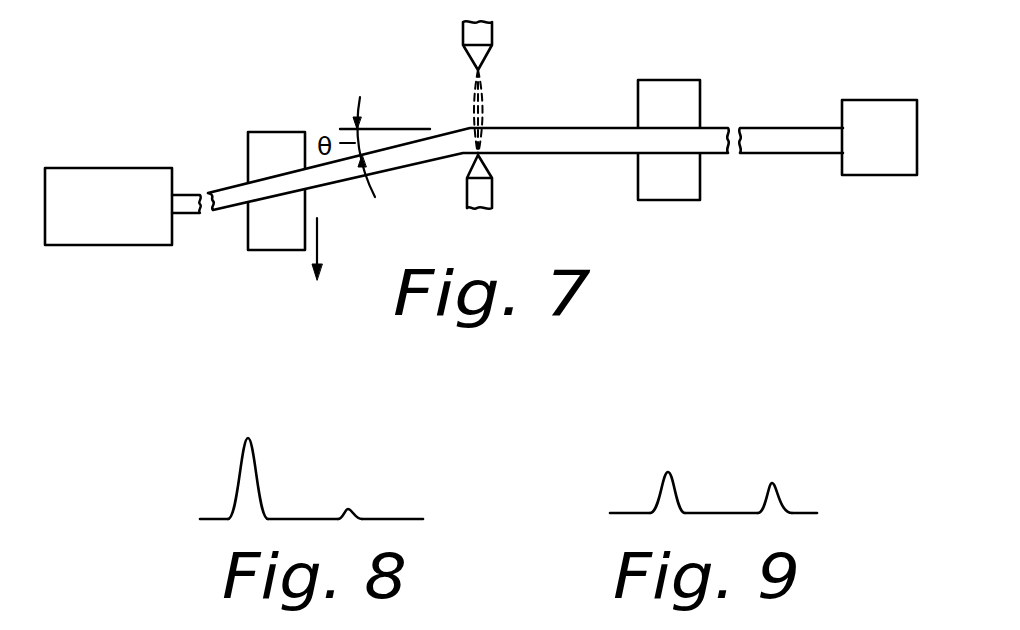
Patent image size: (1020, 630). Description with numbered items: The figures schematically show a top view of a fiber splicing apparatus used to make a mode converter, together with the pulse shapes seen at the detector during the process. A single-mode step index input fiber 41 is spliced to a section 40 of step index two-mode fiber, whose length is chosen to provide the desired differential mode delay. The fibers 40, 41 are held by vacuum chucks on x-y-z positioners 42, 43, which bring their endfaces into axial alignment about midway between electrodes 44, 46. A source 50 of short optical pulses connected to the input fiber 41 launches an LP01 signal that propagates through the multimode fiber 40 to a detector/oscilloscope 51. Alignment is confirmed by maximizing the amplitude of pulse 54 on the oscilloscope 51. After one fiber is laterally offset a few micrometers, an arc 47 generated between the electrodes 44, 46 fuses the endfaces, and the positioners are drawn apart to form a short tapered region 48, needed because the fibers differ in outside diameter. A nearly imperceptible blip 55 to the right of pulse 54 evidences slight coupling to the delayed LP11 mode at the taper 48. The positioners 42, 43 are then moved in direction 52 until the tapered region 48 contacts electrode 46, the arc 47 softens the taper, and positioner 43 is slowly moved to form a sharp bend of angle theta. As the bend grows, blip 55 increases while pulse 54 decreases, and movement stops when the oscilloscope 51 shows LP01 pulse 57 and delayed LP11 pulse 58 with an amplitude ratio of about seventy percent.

In FIG. 7, the section of step index two-mode fiber 40 is at (773, 127).
In FIG. 7, the single-mode step index fiber 41 is at (417, 164).
In FIG. 7, the x-y-z positioner 42 is at (665, 80).
In FIG. 7, the x-y-z positioner 43 is at (273, 132).
In FIG. 7, the electrode 44 is at (493, 35).
In FIG. 7, the electrode 46 is at (467, 192).
In FIG. 7, the arc 47 is at (488, 98).
In FIG. 7, the tapered region 48 is at (488, 145).
In FIG. 7, the source of short optical pulses 50 is at (110, 168).
In FIG. 7, the detector/oscilloscope 51 is at (870, 100).
In FIG. 7, the direction 52 is at (318, 242).
In FIG. 8, the pulse 54 is at (257, 472).
In FIG. 8, the blip 55 is at (351, 504).
In FIG. 9, the pulse 57 is at (675, 483).
In FIG. 9, the pulse 58 is at (778, 492).